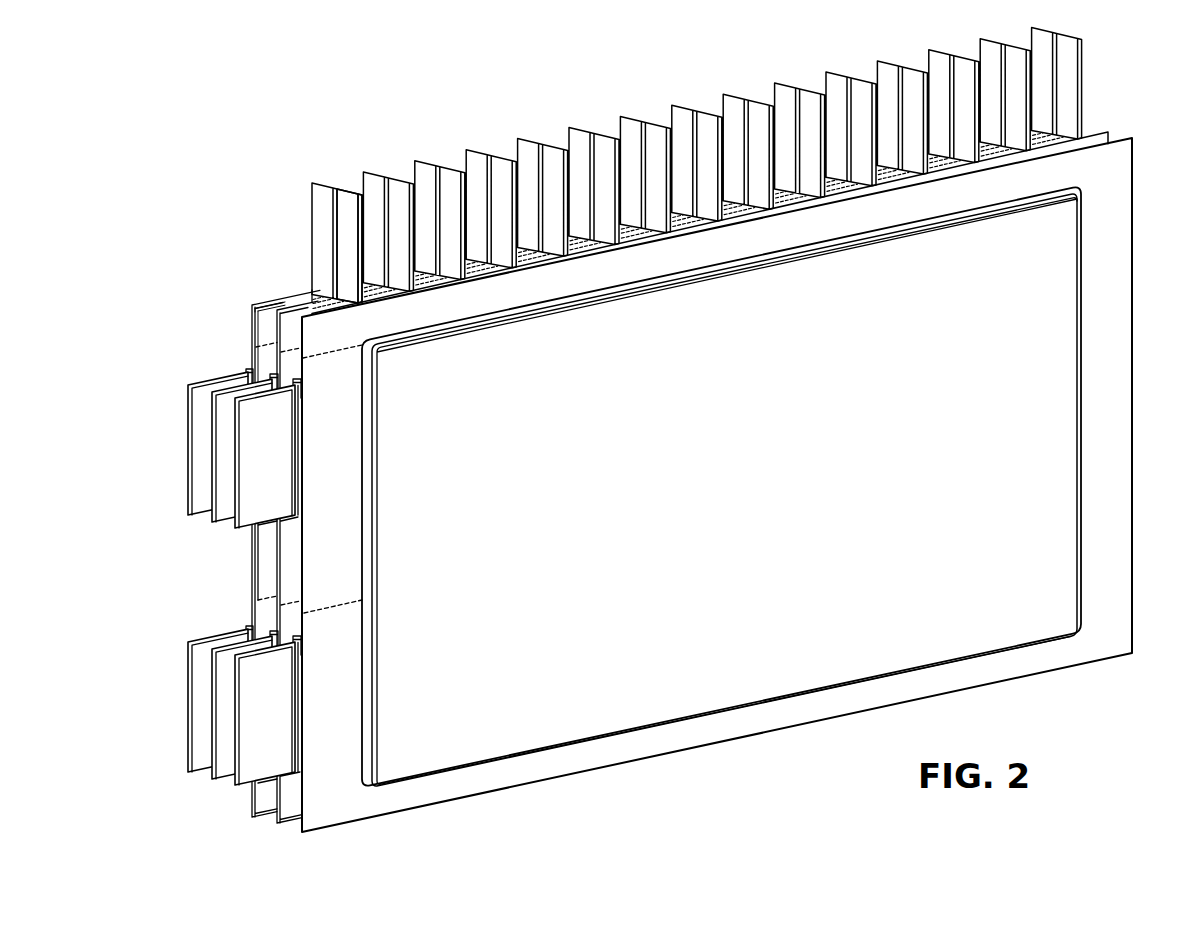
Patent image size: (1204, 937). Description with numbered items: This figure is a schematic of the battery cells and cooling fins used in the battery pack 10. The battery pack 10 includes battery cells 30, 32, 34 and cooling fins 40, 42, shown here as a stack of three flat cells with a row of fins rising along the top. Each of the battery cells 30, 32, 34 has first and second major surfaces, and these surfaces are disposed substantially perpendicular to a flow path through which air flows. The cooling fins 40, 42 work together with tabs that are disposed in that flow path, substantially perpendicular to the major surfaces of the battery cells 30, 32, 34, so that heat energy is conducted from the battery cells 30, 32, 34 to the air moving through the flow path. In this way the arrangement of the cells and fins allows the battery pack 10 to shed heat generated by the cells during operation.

The battery pack 10 is at (1140, 106).
The battery cell 30 is at (250, 318).
The battery cell 32 is at (287, 300).
The battery cell 34 is at (312, 298).
The cooling fin 40 is at (323, 193).
The cooling fin 42 is at (352, 200).